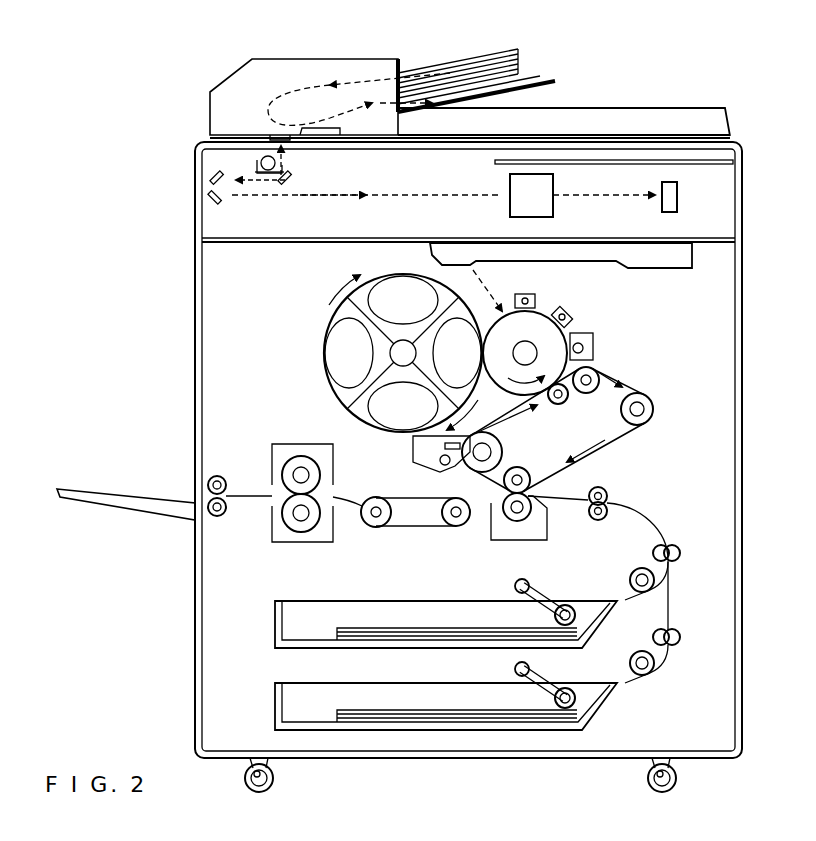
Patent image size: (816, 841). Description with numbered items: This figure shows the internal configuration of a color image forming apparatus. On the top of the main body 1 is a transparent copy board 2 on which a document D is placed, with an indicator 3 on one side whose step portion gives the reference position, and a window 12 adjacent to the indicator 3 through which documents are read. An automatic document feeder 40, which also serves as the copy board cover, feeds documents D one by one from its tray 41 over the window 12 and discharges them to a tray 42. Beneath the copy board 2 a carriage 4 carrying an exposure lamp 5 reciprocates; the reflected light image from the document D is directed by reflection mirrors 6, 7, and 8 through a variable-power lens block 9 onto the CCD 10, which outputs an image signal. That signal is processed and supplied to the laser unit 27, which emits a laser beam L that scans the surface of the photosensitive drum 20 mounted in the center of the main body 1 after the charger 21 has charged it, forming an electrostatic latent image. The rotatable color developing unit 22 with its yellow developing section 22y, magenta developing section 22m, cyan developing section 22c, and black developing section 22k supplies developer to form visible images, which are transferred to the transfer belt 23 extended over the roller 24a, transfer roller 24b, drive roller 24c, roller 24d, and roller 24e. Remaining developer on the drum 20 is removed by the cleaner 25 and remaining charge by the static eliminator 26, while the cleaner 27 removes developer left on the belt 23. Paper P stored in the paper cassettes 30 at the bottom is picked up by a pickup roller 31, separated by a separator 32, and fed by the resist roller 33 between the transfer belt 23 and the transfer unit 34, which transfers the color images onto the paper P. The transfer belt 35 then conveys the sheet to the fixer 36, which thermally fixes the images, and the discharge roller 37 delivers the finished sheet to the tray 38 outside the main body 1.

The main body 1 is at (742, 212).
The copy board 2 is at (494, 161).
The indicator 3 is at (340, 128).
The carriage 4 is at (268, 176).
The exposure lamp 5 is at (276, 163).
The reflection mirror 6 is at (292, 179).
The reflection mirror 7 is at (209, 178).
The reflection mirror 8 is at (222, 200).
The variable-power lens block 9 is at (553, 183).
The CCD 10 is at (677, 200).
The window 12 is at (289, 140).
The photosensitive drum 20 is at (506, 390).
The charger 21 is at (533, 294).
The color developing unit 22 is at (376, 326).
The cyan developing section 22c is at (329, 353).
The magenta developing section 22m is at (398, 283).
The yellow developing section 22y is at (457, 325).
The black developing section 22k is at (366, 410).
The transfer belt 23 is at (587, 430).
The roller 24a is at (502, 450).
The transfer roller 24b is at (560, 405).
The drive roller 24c is at (588, 393).
The roller 24d is at (654, 409).
The roller 24e is at (532, 479).
The cleaner 25 is at (594, 346).
The static eliminator 26 is at (571, 312).
The laser unit 27 is at (672, 268).
The paper cassette 30 is at (275, 618).
The pickup roller 31 is at (582, 602).
The separator 32 is at (633, 572).
The resist roller 33 is at (590, 517).
The transfer unit 34 is at (491, 533).
The transfer belt 35 is at (408, 498).
The fixer 36 is at (290, 444).
The discharge roller 37 is at (217, 476).
The tray 38 is at (120, 505).
The automatic document feeder 40 is at (343, 59).
The tray 41 is at (548, 68).
The tray 42 is at (634, 108).
The document D is at (480, 53).
The laser beam L is at (493, 296).
The paper P is at (424, 628).